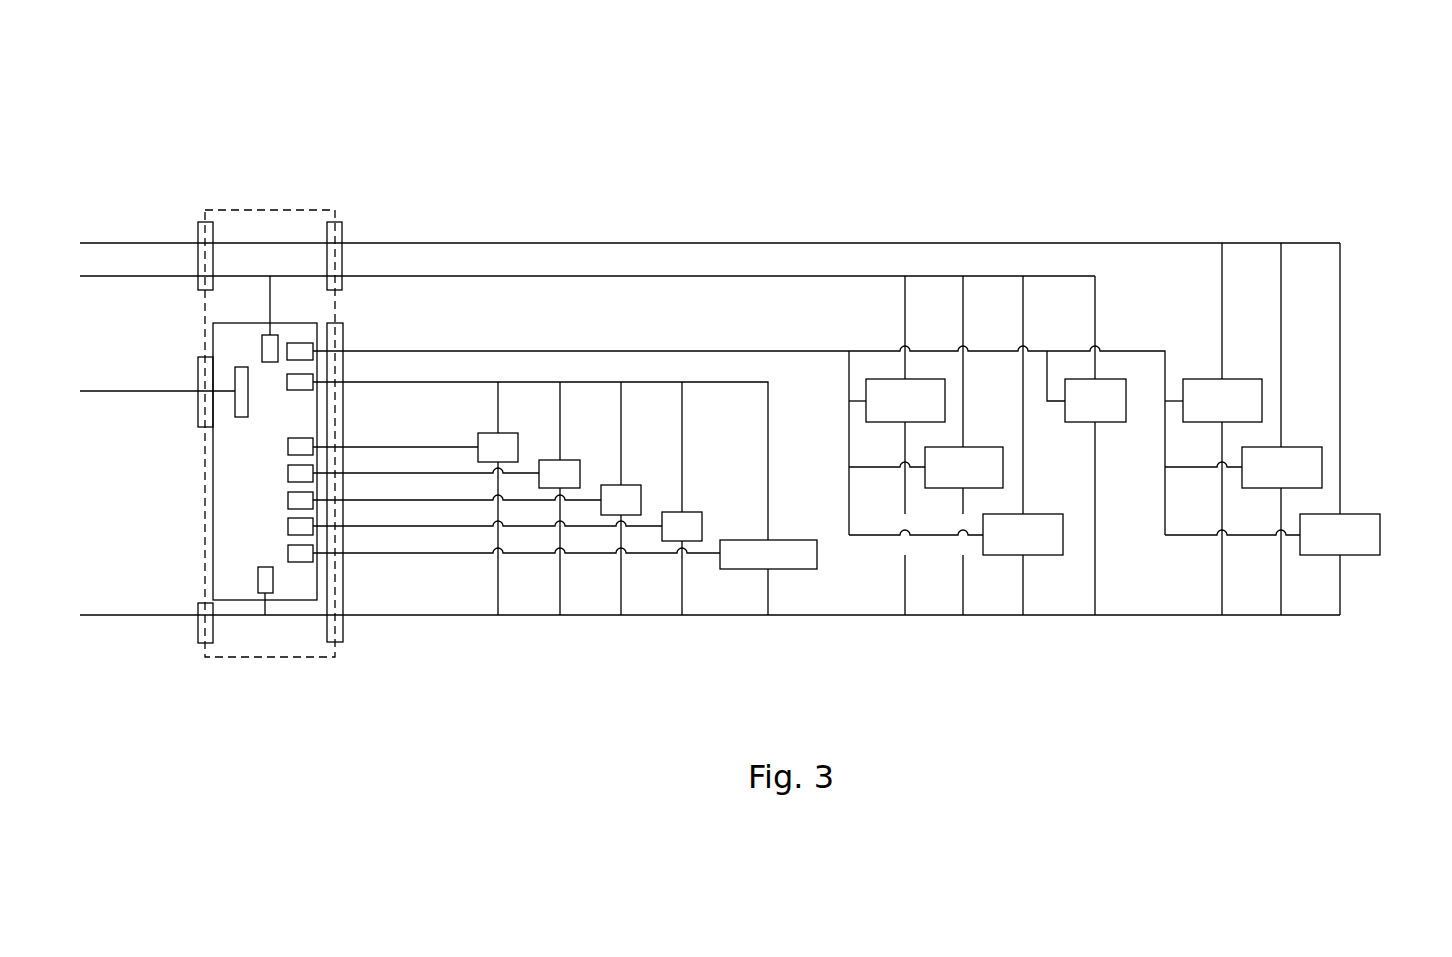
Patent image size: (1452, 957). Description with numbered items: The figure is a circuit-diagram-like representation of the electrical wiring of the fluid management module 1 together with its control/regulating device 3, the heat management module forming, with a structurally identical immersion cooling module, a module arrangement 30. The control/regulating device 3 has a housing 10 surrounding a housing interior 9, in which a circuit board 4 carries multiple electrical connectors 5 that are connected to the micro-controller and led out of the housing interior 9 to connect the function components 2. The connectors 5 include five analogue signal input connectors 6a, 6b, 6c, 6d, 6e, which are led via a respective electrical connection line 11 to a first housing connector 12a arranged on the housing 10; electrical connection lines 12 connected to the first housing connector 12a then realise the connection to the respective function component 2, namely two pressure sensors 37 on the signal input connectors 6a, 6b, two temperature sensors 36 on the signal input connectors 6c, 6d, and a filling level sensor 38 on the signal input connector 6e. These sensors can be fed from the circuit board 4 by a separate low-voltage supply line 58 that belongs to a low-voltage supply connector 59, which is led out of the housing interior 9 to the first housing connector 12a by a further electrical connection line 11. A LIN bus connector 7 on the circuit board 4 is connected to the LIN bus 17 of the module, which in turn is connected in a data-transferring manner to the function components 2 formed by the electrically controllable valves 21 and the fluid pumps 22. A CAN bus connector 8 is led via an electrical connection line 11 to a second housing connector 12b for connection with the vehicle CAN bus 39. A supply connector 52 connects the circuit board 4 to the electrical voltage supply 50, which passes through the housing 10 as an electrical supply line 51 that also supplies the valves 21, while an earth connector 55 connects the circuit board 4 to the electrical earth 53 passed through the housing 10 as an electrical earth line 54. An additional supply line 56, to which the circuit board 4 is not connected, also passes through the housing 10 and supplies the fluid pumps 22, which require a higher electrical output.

The fluid management module 1 is at (1233, 203).
The function components 2 is at (965, 474).
The control/regulating device 3 is at (258, 200).
The circuit board 4 is at (205, 535).
The electrical connectors 5 is at (310, 471).
The analogue signal input connector 6a is at (288, 447).
The analogue signal input connector 6b is at (288, 473).
The analogue signal input connector 6c is at (288, 500).
The analogue signal input connector 6d is at (288, 526).
The analogue signal input connector 6e is at (288, 553).
The LIN bus connector 7 is at (312, 347).
The CAN bus connector 8 is at (248, 392).
The housing interior 9 is at (235, 313).
The housing 10 is at (281, 209).
The electrical connection line 11 is at (270, 280).
The electrical connection lines 12 is at (408, 446).
The first housing connector 12a is at (343, 603).
The second housing connector 12b is at (198, 370).
The LIN bus 17 is at (639, 351).
The electrically controllable valves 21 is at (945, 400).
The fluid pumps 22 is at (1262, 400).
The module arrangement 30 is at (1105, 158).
The temperature sensors 36 is at (630, 485).
The pressure sensors 37 is at (506, 433).
The filling level sensor 38 is at (817, 555).
The CAN bus 39 is at (107, 393).
The electrical voltage supply 50 is at (103, 243).
The electrical supply line 51 is at (156, 277).
The supply connector 52 is at (282, 345).
The electrical earth 53 is at (103, 616).
The electrical earth line 54 is at (801, 617).
The earth connector 55 is at (276, 585).
The additional supply line 56 is at (778, 207).
The low-voltage supply line 58 is at (735, 383).
The low-voltage supply connector 59 is at (310, 388).